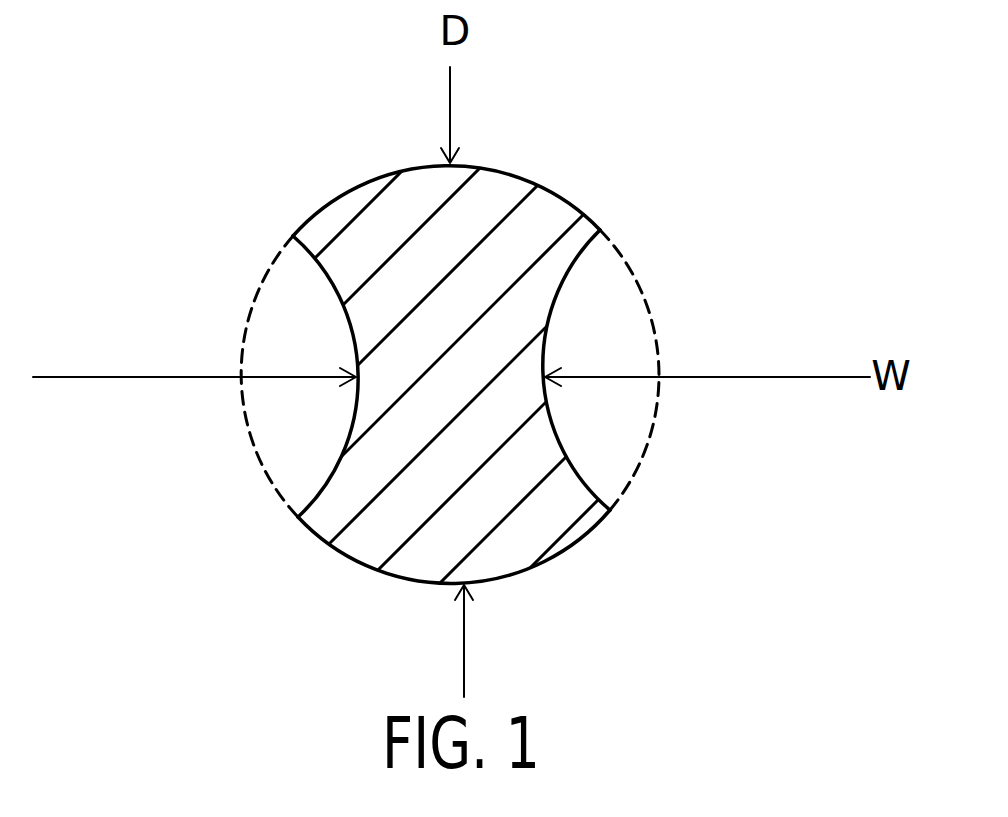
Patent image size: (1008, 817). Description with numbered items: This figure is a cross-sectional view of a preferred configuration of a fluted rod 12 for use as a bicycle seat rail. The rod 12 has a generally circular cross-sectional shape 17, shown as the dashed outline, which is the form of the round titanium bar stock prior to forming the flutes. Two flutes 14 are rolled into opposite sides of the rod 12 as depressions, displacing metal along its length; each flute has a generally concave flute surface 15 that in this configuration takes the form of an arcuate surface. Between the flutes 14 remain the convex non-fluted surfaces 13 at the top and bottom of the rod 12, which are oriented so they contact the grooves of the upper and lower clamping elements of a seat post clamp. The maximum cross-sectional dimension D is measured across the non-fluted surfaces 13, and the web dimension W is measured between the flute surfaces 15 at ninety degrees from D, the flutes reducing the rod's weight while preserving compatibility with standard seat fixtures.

The fluted rod 12 is at (455, 165).
The non-fluted surfaces 13 is at (337, 178).
The flutes 14 is at (305, 313).
The flute surfaces 15 is at (340, 468).
The generally circular cross-sectional shape 17 is at (240, 355).